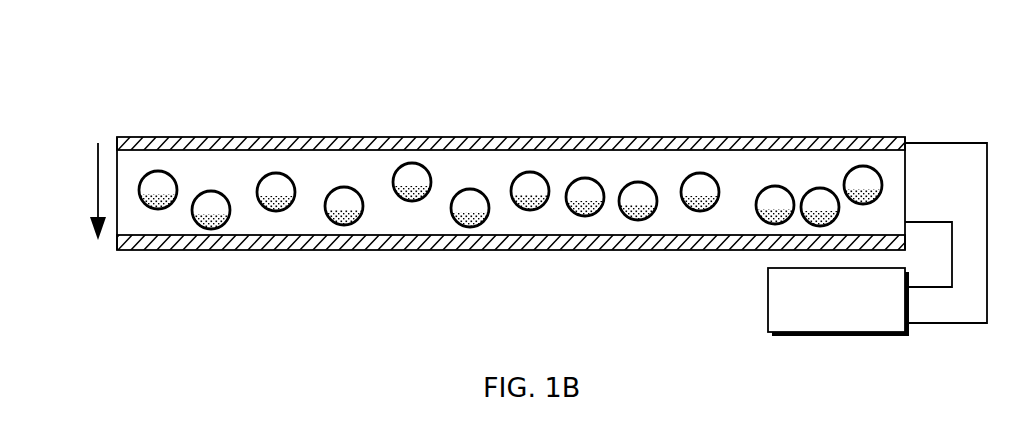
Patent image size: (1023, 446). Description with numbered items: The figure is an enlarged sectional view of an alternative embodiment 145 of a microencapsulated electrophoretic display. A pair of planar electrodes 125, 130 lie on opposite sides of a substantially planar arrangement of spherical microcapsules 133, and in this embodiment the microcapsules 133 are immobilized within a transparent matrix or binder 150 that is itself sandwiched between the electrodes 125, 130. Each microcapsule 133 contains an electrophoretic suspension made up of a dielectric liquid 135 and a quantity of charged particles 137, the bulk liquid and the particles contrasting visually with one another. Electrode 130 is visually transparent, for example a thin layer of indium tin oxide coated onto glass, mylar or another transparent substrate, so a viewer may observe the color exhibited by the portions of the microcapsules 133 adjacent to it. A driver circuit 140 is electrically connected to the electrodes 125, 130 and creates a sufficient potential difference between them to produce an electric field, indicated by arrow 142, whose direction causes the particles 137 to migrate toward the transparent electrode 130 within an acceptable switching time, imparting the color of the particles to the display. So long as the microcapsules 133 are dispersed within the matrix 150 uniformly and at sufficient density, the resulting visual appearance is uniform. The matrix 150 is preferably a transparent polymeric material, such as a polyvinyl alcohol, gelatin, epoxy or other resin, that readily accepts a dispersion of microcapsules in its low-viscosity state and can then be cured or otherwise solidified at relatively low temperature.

The alternative embodiment 145 is at (237, 33).
The planar electrode 125 is at (163, 137).
The planar electrode 130 is at (190, 250).
The microcapsules 133 is at (213, 190).
The dielectric liquid 135 is at (530, 182).
The charged particles 137 is at (637, 210).
The arrows indicating electric field 142 is at (97, 185).
The transparent matrix or binder 150 is at (398, 217).
The driver circuit 140 is at (768, 305).